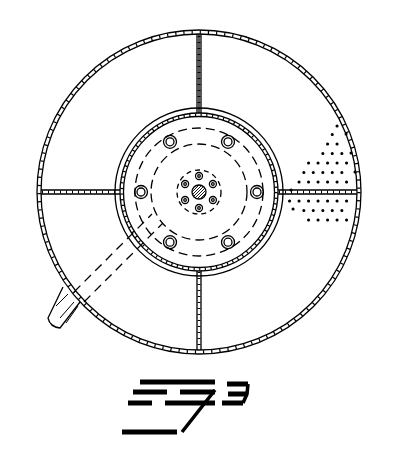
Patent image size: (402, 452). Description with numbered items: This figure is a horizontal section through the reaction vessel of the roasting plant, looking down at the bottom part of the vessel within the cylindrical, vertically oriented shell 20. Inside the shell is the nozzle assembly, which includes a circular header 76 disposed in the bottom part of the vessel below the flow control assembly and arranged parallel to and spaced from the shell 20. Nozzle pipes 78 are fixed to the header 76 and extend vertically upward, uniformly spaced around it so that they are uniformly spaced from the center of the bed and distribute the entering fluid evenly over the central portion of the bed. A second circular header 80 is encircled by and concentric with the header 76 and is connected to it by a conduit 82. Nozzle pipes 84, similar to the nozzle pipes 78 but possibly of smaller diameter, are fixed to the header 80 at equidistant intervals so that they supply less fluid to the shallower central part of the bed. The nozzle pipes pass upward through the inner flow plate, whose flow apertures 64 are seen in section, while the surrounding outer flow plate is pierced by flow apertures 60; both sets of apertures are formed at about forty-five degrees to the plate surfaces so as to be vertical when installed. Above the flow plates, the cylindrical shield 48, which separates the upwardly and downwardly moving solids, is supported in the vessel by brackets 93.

The shell 20 is at (76, 86).
The brackets 93 is at (197, 60).
The flow apertures 64 is at (278, 168).
The cylindrical shield 48 is at (263, 247).
The circular header 76 is at (241, 223).
The nozzle pipes 84 is at (189, 166).
The second circular header 80 is at (211, 181).
The nozzle pipes 78 is at (163, 146).
The conduit 82 is at (163, 223).
The flow apertures 60 is at (323, 134).